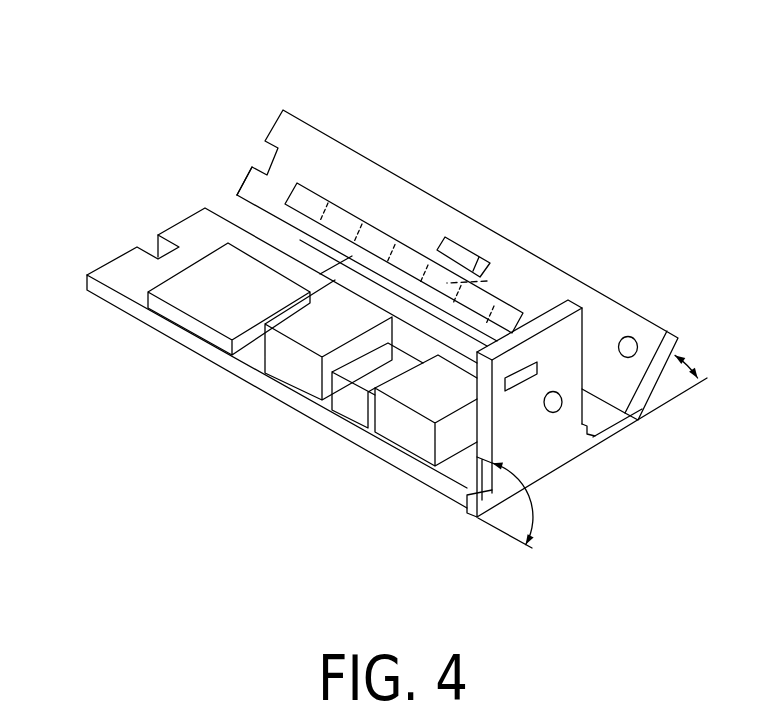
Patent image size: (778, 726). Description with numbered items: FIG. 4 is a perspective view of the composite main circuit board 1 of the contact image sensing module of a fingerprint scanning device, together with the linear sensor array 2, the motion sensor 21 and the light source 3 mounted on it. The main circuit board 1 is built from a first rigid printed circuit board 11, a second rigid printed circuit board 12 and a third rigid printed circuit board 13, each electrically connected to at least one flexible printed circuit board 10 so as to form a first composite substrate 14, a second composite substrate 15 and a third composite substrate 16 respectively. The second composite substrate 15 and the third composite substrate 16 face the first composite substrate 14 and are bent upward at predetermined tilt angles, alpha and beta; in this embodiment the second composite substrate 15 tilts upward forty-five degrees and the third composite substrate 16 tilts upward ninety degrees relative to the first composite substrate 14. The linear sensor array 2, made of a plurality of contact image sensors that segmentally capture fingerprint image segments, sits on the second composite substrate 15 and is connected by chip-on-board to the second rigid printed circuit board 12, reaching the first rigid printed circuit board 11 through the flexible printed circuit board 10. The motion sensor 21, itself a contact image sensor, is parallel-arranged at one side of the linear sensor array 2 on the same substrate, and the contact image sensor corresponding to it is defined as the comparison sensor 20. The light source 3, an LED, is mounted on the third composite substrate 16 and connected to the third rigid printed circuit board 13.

The main circuit board 1 is at (373, 327).
The linear sensor array 2 is at (450, 206).
The light source 3 is at (536, 428).
The flexible printed circuit board 10 is at (607, 417).
The first rigid printed circuit board 11 is at (258, 346).
The second rigid printed circuit board 12 is at (401, 237).
The third rigid printed circuit board 13 is at (483, 424).
The first composite substrate 14 is at (115, 308).
The second composite substrate 15 is at (243, 177).
The third composite substrate 16 is at (543, 459).
The comparison sensor 20 is at (487, 281).
The motion sensor 21 is at (462, 256).